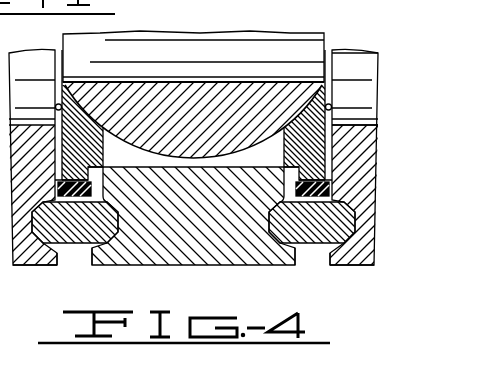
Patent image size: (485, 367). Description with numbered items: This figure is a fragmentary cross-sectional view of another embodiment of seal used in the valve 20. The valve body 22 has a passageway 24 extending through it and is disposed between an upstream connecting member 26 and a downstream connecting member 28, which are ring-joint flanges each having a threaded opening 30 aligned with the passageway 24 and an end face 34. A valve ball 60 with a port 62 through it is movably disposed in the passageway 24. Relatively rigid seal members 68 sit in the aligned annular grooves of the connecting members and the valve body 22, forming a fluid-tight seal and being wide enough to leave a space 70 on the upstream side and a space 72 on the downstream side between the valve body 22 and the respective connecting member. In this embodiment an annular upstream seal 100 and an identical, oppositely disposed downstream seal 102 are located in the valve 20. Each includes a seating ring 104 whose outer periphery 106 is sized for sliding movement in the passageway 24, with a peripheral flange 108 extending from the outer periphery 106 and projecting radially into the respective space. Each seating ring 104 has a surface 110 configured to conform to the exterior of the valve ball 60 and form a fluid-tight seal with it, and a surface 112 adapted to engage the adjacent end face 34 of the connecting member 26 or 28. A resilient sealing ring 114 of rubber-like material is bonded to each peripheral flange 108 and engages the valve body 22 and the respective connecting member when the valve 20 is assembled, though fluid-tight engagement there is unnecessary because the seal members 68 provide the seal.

The valve 20 is at (339, 31).
The valve body 22 is at (196, 232).
The passageway 24 is at (207, 160).
The upstream connecting member 26 is at (38, 267).
The downstream connecting member 28 is at (364, 255).
The threaded opening 30 is at (354, 60).
The end face 34 is at (56, 104).
The valve ball 60 is at (242, 150).
The port 62 is at (193, 56).
The seal member 68 is at (86, 232).
The space 70 is at (80, 258).
The space 72 is at (310, 258).
The upstream seal 100 is at (72, 144).
The downstream seal 102 is at (312, 151).
The seating ring 104 is at (92, 153).
The outer periphery 106 is at (100, 170).
The peripheral flange 108 is at (72, 173).
The surface 110 is at (97, 115).
The surface 112 is at (60, 130).
The resilient sealing ring 114 is at (93, 190).